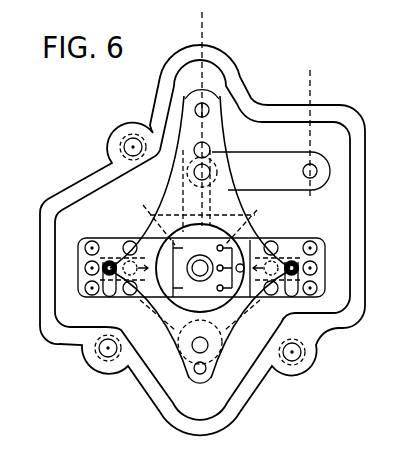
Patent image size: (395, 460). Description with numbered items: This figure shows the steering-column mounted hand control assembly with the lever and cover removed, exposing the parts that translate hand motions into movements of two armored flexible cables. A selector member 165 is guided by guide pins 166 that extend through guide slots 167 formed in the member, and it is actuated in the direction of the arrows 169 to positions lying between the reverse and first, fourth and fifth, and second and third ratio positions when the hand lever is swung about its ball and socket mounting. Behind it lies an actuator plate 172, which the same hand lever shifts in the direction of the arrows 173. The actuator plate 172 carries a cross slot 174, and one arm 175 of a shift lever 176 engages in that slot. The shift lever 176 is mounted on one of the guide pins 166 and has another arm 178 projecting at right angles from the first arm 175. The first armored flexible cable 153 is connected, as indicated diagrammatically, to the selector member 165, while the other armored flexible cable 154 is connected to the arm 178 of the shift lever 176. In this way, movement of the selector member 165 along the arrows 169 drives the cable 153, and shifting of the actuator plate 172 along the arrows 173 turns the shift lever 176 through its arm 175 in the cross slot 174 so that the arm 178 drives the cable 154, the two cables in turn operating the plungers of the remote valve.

The armored flexible cable 153 is at (205, 37).
The armored flexible cable 154 is at (323, 98).
The selector member 165 is at (185, 374).
The guide pins 166 is at (197, 167).
The guide slots 167 is at (215, 150).
The arrows 169 is at (213, 108).
The actuator plate 172 is at (147, 229).
The arrows 173 is at (170, 254).
The cross slot 174 is at (160, 213).
The arm 175 is at (170, 314).
The shift lever 176 is at (200, 206).
The arm 178 is at (312, 190).